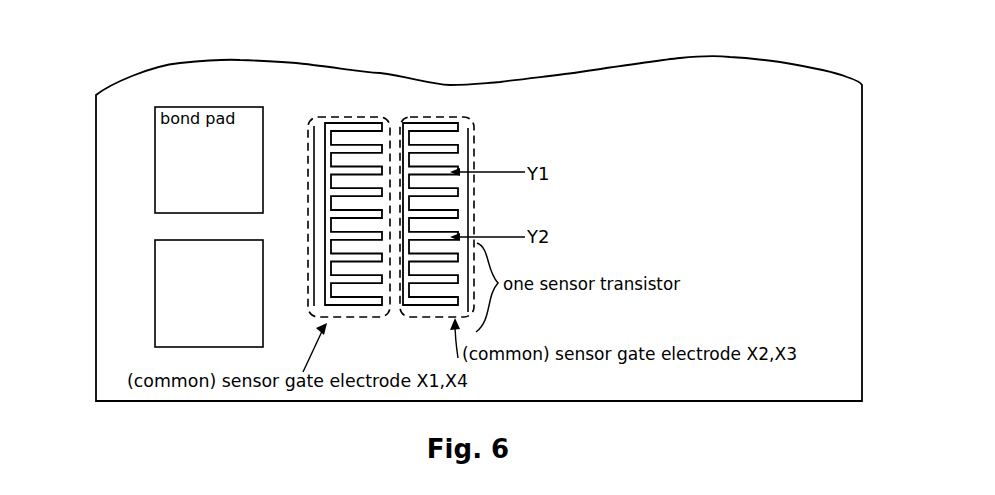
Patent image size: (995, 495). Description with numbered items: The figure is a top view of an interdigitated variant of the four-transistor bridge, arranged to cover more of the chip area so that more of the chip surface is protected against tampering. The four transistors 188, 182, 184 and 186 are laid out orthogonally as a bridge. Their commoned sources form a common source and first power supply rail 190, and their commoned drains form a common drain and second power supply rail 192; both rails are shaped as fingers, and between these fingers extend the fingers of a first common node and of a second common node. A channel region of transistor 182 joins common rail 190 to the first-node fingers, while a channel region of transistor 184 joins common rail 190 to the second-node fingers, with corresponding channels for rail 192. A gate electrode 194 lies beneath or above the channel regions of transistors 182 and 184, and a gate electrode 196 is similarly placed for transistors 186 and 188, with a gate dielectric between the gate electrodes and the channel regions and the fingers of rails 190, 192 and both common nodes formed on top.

The transistor 182 is at (485, 144).
The transistor 184 is at (499, 311).
The transistor 186 is at (297, 258).
The transistor 188 is at (297, 146).
The common source and first power supply rail 190 is at (465, 210).
The common drain and second power supply rail 192 is at (325, 117).
The gate electrode 194 is at (445, 113).
The gate electrode 196 is at (349, 115).